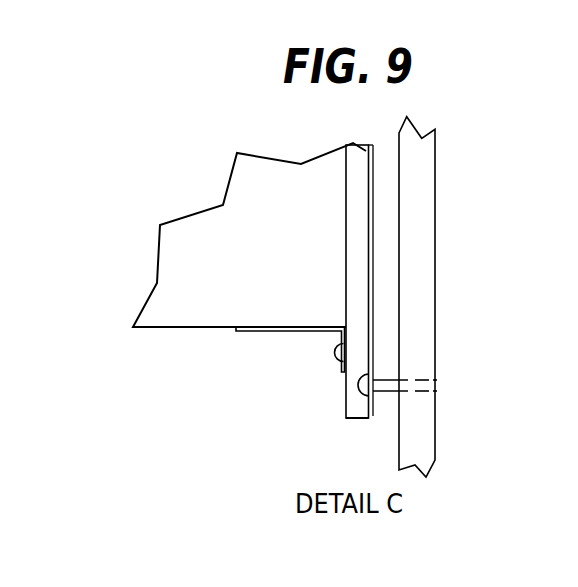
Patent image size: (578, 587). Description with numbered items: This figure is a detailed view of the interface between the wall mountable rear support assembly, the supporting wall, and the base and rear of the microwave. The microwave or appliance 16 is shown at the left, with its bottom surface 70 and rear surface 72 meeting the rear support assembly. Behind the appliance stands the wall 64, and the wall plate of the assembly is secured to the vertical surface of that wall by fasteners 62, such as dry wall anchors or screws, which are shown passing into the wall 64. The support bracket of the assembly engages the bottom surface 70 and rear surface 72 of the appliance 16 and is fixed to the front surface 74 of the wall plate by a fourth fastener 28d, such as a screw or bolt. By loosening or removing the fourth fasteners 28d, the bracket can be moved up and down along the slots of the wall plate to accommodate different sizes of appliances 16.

The microwave or appliance 16 is at (285, 272).
The bottom surface 70 is at (160, 328).
The rear surface 72 is at (346, 176).
The front surface 74 is at (345, 408).
The fourth fasteners 28d is at (332, 357).
The fasteners 62 is at (383, 387).
The wall 64 is at (435, 193).